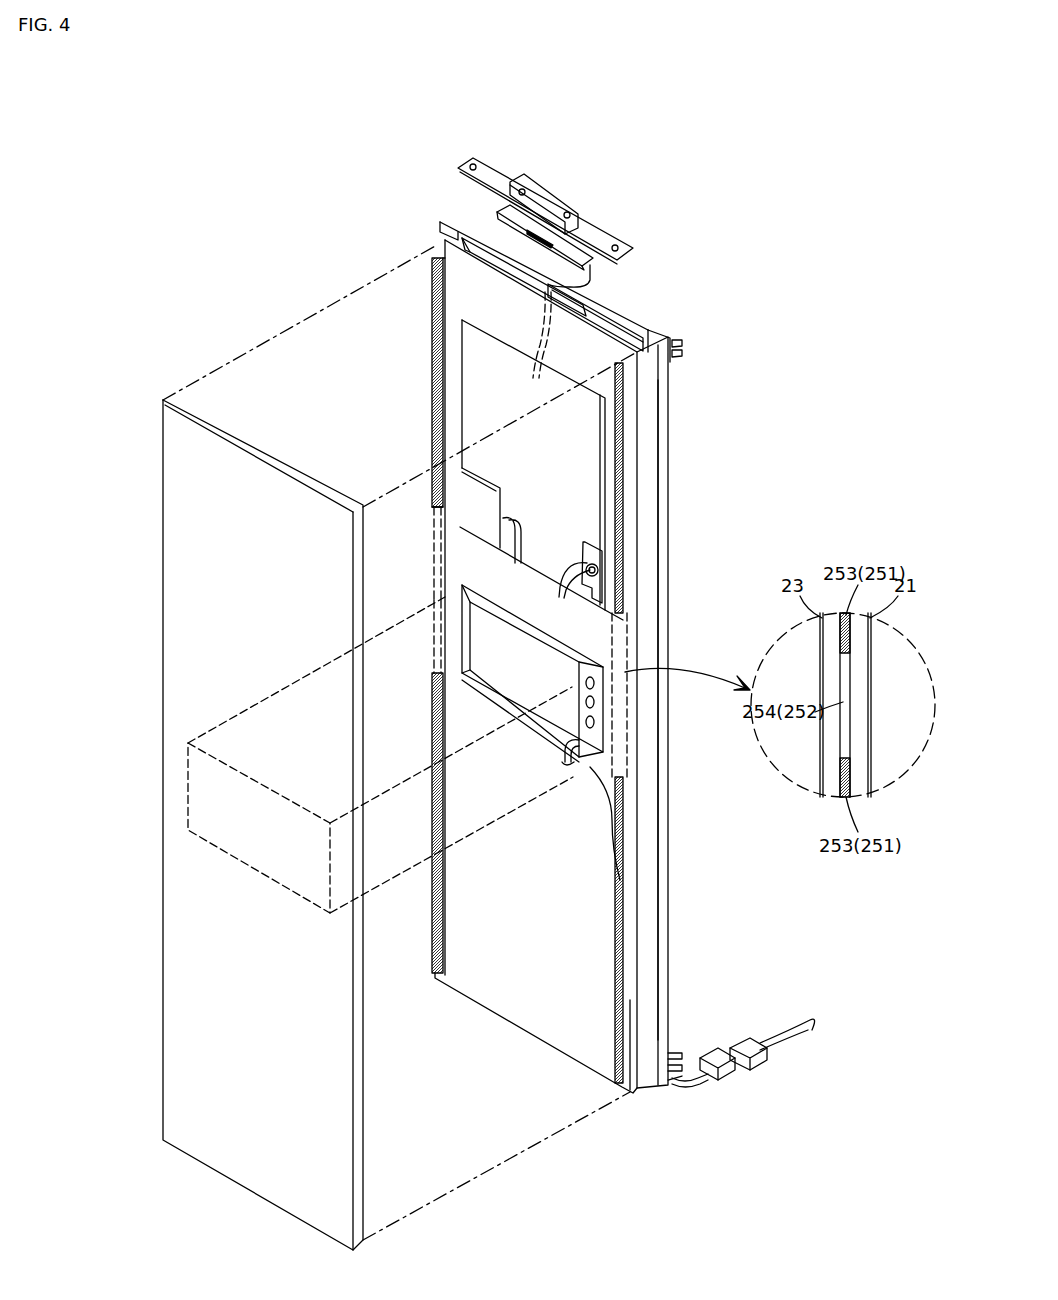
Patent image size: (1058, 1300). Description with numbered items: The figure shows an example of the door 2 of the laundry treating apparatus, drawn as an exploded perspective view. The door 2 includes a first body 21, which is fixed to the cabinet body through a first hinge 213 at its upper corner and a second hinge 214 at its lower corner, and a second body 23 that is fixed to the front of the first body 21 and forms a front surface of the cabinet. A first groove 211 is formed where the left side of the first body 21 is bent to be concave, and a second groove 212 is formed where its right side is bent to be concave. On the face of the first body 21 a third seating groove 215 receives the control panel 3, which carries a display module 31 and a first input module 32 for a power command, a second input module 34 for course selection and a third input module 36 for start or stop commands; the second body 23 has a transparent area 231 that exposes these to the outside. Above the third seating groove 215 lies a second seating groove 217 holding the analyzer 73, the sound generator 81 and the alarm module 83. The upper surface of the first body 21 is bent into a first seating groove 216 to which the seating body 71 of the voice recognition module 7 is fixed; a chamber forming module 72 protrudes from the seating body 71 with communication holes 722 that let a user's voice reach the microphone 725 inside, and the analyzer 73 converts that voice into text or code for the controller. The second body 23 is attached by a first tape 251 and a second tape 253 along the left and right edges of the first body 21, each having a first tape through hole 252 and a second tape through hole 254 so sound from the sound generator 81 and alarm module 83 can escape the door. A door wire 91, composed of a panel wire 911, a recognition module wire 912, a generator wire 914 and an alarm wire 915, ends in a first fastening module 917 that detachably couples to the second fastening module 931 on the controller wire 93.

The door 2 is at (212, 240).
The second body 23 is at (163, 1032).
The transparent area 231 is at (188, 782).
The first body 21 is at (608, 637).
The first groove 211 is at (448, 226).
The second groove 212 is at (645, 430).
The first hinge 213 is at (670, 336).
The second hinge 214 is at (678, 1050).
The third seating groove 215 is at (445, 615).
The first seating groove 216 is at (600, 305).
The second seating groove 217 is at (600, 500).
The first tape 251 is at (432, 420).
The first tape through hole 252 is at (436, 648).
The second tape 253 is at (618, 470).
The second tape through hole 254 is at (627, 780).
The control panel 3 is at (718, 697).
The display module 31 is at (596, 684).
The first input module 32 is at (596, 703).
The second input module 34 is at (596, 723).
The third input module 36 is at (582, 752).
The voice recognition module 7 is at (592, 128).
The seating body 71 is at (598, 233).
The chamber forming module 72 is at (555, 202).
The communication hole 722 is at (524, 188).
The microphone 725 is at (518, 185).
The analyzer 73 is at (505, 215).
The sound generator 81 is at (600, 568).
The alarm module 83 is at (477, 498).
The door wire 91 is at (688, 1092).
The panel wire 911 is at (618, 860).
The recognition module wire 912 is at (595, 270).
The generator wire 914 is at (600, 602).
The alarm wire 915 is at (500, 538).
The first fastening module 917 is at (722, 1080).
The controller wire 93 is at (792, 1052).
The second fastening module 931 is at (740, 1032).